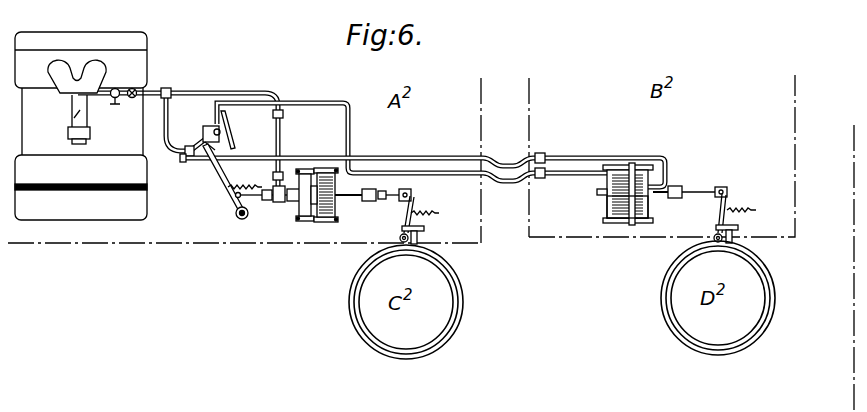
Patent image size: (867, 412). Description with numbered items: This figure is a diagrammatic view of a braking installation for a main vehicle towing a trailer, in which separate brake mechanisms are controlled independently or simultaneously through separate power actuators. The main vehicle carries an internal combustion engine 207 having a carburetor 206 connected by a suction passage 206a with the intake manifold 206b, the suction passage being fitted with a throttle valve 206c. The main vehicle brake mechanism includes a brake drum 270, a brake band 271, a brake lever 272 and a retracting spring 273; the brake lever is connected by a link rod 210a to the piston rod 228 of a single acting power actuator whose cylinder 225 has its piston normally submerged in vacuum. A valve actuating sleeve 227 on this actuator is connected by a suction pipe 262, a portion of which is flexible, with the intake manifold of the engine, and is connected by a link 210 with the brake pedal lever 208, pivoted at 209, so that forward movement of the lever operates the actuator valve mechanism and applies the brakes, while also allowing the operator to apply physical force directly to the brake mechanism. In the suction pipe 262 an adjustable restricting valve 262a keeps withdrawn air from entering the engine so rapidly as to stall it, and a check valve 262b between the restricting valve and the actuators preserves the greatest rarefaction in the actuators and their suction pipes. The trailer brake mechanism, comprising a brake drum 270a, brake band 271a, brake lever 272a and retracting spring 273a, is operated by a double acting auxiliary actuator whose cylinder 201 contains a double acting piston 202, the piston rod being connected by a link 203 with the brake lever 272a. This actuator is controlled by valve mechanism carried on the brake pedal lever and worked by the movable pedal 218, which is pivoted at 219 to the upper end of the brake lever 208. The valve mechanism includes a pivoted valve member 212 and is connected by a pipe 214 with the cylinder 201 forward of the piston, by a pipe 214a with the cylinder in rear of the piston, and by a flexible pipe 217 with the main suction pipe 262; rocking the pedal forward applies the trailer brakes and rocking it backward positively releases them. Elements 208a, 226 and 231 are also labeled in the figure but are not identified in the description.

The internal combustion engine 207 is at (80, 27).
The carburetor 206 is at (68, 136).
The suction passage 206a is at (72, 106).
The intake manifold 206b is at (104, 68).
The throttle valve 206c is at (75, 118).
The suction pipe 262 is at (273, 96).
The adjustable restricting valve 262a is at (117, 90).
The check valve 262b is at (134, 90).
The valve member 212 is at (211, 126).
The flexible pipe 217 is at (168, 152).
The movable pedal 218 is at (220, 140).
The pivot 219 is at (224, 125).
The brake pedal lever 208 is at (236, 192).
The return spring 208a is at (245, 185).
The pivot 209 is at (236, 214).
The link 210 is at (256, 203).
The link rod 210a is at (398, 193).
The valve actuating sleeve 227 is at (284, 187).
The coupling 231 is at (290, 201).
The cylinder 225 is at (314, 220).
The piston 226 is at (327, 221).
The piston rod 228 is at (357, 197).
The brake lever 272 is at (402, 224).
The retracting spring 273 is at (432, 210).
The brake drum 270 is at (440, 273).
The brake band 271 is at (458, 306).
The pipe 214 is at (571, 175).
The pipe 214a is at (572, 155).
The cylinder 201 is at (626, 168).
The double acting piston 202 is at (633, 225).
The link 203 is at (700, 190).
The brake lever 272a is at (717, 217).
The retracting spring 273a is at (738, 211).
The brake drum 270a is at (702, 340).
The brake band 271a is at (771, 335).